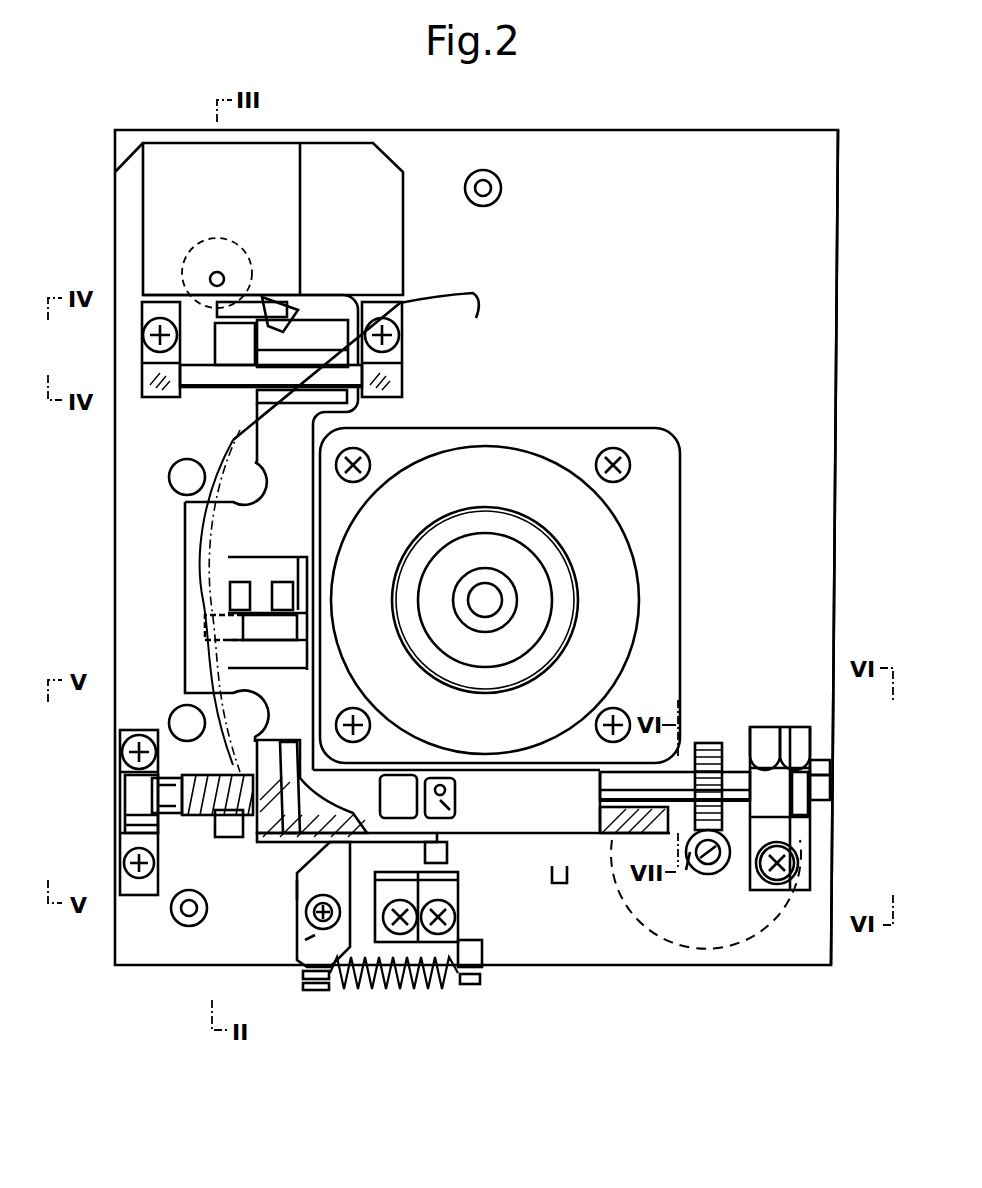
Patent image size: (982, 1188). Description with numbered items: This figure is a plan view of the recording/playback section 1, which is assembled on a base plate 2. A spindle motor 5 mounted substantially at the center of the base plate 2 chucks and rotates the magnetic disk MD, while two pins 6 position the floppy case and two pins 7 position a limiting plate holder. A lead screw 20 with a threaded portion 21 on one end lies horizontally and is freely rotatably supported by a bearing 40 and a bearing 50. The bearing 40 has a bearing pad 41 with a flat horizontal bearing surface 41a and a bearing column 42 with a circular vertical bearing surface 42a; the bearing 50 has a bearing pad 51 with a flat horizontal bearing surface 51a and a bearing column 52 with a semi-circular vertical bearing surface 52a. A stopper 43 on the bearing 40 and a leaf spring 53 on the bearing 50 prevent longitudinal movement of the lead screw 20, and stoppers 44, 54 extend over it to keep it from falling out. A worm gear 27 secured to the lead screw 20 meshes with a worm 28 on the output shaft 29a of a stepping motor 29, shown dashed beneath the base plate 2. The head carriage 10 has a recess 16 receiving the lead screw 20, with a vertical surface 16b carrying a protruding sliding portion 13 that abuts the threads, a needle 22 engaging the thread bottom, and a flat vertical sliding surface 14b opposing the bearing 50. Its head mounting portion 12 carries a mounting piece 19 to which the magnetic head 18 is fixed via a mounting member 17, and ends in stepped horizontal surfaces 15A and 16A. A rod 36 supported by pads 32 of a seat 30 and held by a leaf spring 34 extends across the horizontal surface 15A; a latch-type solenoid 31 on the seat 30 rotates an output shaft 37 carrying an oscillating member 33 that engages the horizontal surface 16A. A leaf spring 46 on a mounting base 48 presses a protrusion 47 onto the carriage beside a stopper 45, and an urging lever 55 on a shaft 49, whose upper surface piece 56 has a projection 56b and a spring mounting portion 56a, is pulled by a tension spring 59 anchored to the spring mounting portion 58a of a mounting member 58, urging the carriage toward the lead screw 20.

The recording/playback section 1 is at (858, 458).
The base plate 2 is at (837, 520).
The spindle motor 5 is at (678, 545).
The pins 6 is at (198, 906).
The pins 7 is at (178, 710).
The head carriage 10 is at (560, 827).
The head mounting portion 12 is at (235, 692).
The protruding sliding portion 13 is at (250, 838).
The flat vertical sliding surface 14b is at (643, 834).
The horizontal surface 15A is at (302, 426).
The recess 16 is at (342, 868).
The horizontal surface 16A is at (296, 322).
The inwardly directed vertical surface 16b is at (358, 846).
The mounting member 17 is at (269, 640).
The magnetic head 18 is at (285, 606).
The mounting piece 19 is at (282, 568).
The lead screw 20 is at (597, 803).
The threaded portion 21 is at (215, 826).
The needle 22 is at (288, 840).
The worm gear 27 is at (700, 743).
The worm 28 is at (713, 876).
The stepping motor 29 is at (766, 932).
The output shaft 29a is at (688, 872).
The seat 30 is at (122, 275).
The latch-type solenoid 31 is at (150, 205).
The pads 32 is at (385, 399).
The oscillating member 33 is at (294, 303).
The leaf spring 34 is at (402, 380).
The rod 36 is at (222, 377).
The output shaft 37 is at (222, 276).
The bearing 40 is at (120, 740).
The bearing pad 41 is at (120, 846).
The flat horizontal bearing surface 41a is at (125, 820).
The bearing column 42 is at (122, 752).
The vertical bearing surface 42a is at (140, 738).
The stopper 43 is at (125, 795).
The stopper 44 is at (125, 780).
The stopper 45 is at (400, 775).
The leaf spring 46 is at (447, 778).
The protrusion 47 is at (460, 795).
The mounting base 48 is at (466, 926).
The shaft 49 is at (305, 920).
The bearing 50 is at (815, 731).
The bearing pad 51 is at (812, 746).
The flat horizontal bearing surface 51a is at (830, 768).
The bearing column 52 is at (765, 727).
The vertical bearing surface 52a is at (790, 727).
The leaf spring 53 is at (830, 792).
The stopper 54 is at (825, 812).
The urging lever 55 is at (297, 886).
The upper surface piece 56 is at (300, 947).
The spring mounting portion 56a is at (314, 992).
The projection 56b is at (452, 844).
The mounting member 58 is at (482, 962).
The spring mounting portion 58a is at (478, 986).
The tension spring 59 is at (406, 997).
The magnetic disk MD is at (446, 300).